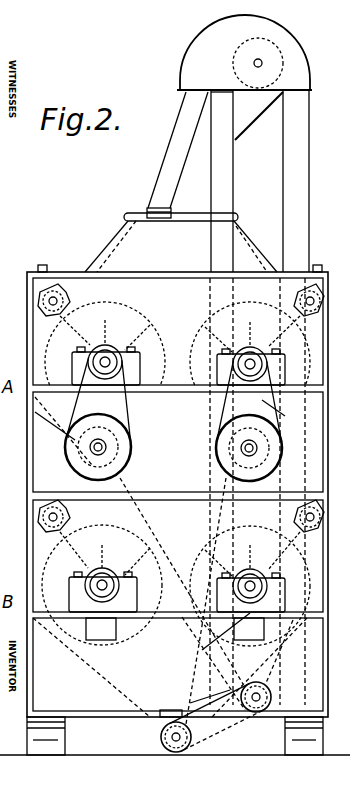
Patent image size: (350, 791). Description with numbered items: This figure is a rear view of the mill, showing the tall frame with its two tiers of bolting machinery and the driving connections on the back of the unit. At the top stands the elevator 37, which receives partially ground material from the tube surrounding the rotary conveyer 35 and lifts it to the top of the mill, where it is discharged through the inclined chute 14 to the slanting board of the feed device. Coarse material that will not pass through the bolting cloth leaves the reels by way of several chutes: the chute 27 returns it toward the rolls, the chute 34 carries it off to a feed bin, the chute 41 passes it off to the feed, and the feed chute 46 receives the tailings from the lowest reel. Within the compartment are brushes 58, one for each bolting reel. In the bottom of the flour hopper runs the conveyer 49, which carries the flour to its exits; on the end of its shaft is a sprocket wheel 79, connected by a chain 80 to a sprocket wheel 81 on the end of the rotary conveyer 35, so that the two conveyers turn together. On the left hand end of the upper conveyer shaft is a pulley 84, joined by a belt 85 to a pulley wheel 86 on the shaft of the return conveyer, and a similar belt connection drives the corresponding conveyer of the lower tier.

The chute 14 is at (160, 184).
The chute 27 is at (284, 415).
The chute 34 is at (213, 639).
The rotary conveyer 35 is at (272, 697).
The elevator 37 is at (312, 80).
The chute 41 is at (63, 431).
The feed chute 46 is at (118, 628).
The conveyer 49 is at (160, 740).
The brushes 58 is at (62, 290).
The sprocket wheel 79 is at (170, 716).
The chain 80 is at (203, 712).
The sprocket wheel 81 is at (254, 688).
The pulley 84 is at (112, 352).
The belt 85 is at (128, 428).
The pulley wheel 86 is at (131, 452).